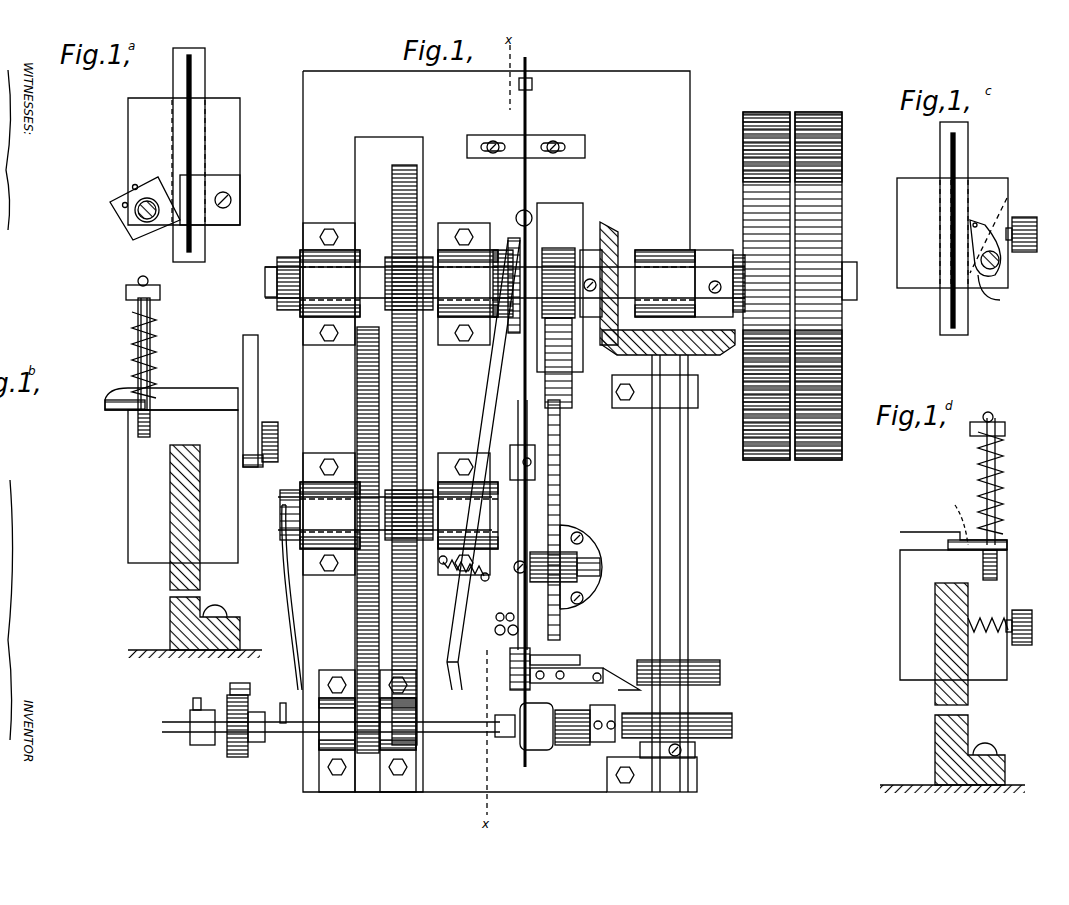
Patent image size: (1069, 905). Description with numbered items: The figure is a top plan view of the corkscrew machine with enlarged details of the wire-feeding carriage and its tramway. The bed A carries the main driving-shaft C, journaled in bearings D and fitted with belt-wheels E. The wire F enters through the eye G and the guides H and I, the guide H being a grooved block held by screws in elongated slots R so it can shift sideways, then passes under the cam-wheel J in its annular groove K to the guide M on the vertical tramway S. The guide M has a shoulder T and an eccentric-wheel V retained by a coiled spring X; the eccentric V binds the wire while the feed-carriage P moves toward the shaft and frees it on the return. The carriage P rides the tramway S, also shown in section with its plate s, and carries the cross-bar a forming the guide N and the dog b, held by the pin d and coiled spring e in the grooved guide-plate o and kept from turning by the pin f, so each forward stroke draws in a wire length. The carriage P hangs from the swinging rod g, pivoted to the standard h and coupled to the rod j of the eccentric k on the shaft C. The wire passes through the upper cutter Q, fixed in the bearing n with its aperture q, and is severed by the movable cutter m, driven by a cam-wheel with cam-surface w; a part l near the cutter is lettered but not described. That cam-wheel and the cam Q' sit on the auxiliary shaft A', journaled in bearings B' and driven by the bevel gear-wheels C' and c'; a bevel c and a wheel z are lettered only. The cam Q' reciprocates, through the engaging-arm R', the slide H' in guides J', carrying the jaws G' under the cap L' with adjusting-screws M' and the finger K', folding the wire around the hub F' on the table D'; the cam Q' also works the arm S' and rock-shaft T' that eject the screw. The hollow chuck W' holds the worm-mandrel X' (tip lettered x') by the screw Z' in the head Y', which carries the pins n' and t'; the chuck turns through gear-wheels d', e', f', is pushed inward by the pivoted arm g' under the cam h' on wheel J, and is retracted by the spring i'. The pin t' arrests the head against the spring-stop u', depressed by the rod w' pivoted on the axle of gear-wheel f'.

In FIG. 1, the bearings D is at (497, 399).
In FIG. 1, the gear-wheel d' is at (389, 464).
In FIG. 1, the gear-wheel e' is at (414, 455).
In FIG. 1, the gear-wheel f' is at (358, 540).
In FIG. 1, the wire F is at (535, 412).
In FIG. 1, the eye G is at (533, 84).
In FIG. 1, the guide H is at (526, 138).
In FIG. 1, the elongated slots R is at (531, 159).
In FIG. 1, the guide I is at (520, 213).
In FIG. 1, the cam-wheel J is at (509, 278).
In FIG. 1, the annular groove K is at (560, 287).
In FIG. 1, the cam h' is at (502, 278).
In FIG. 1, the standard h is at (558, 328).
In FIG. 1, the bevel gear c is at (613, 276).
In FIG. 1, the main driving-shaft C is at (859, 281).
In FIG. 1, the belt-wheels E is at (799, 286).
In FIG. 1, the bevel gear-wheel c' is at (662, 347).
In FIG. 1, the bevel gear-wheels C' is at (724, 362).
In FIG. 1, the auxiliary driving-shaft A' is at (678, 573).
In FIG. 1, the bearings B' is at (652, 583).
In FIG. 1, the bed A is at (601, 456).
In FIG. 1, the gear z is at (678, 672).
In FIG. 1, the cam Q' is at (677, 725).
In FIG. 1, the arm S' is at (667, 750).
In FIG. 1, the rock-shaft T' is at (631, 762).
In FIG. 1, the rod j is at (552, 514).
In FIG. 1, the tramway S is at (528, 525).
In FIG. 1B, the tramway S is at (173, 519).
In FIG. 1C, the tramway S is at (972, 321).
In FIG. 1D, the tramway S is at (939, 644).
In FIG. 1, the cam-surface w is at (541, 462).
In FIG. 1C, the cam-surface w is at (1008, 264).
In FIG. 1D, the cam-surface w is at (999, 478).
In FIG. 1, the shoulder T is at (508, 440).
In FIG. 1D, the shoulder T is at (941, 606).
In FIG. 1, the guide M is at (503, 470).
In FIG. 1C, the guide M is at (952, 233).
In FIG. 1D, the guide M is at (899, 520).
In FIG. 1, the eccentric-wheel V is at (535, 468).
In FIG. 1C, the eccentric-wheel V is at (988, 265).
In FIG. 1D, the eccentric-wheel V is at (959, 518).
In FIG. 1, the eccentric k is at (565, 567).
In FIG. 1, the guide N is at (516, 567).
In FIG. 1, the central aperture q is at (535, 548).
In FIG. 1, the spring i' is at (464, 574).
In FIG. 1, the pivoted arm g' is at (483, 465).
In FIG. 1, the feed-carriage P is at (497, 598).
In FIG. 1B, the feed-carriage P is at (128, 487).
In FIG. 1, the rod l is at (515, 696).
In FIG. 1, the upper cutter Q is at (528, 664).
In FIG. 1, the dog b is at (497, 625).
In FIG. 1A, the dog b is at (124, 206).
In FIG. 1B, the dog b is at (108, 410).
In FIG. 1, the coiled spring e is at (497, 610).
In FIG. 1A, the coiled spring e is at (119, 221).
In FIG. 1B, the coiled spring e is at (135, 355).
In FIG. 1, the cross-bar a is at (512, 638).
In FIG. 1B, the cross-bar a is at (171, 392).
In FIG. 1, the rod w' is at (282, 597).
In FIG. 1, the worm-mandrel X' is at (188, 730).
In FIG. 1, the screw Z' is at (195, 696).
In FIG. 1, the head Y' is at (237, 736).
In FIG. 1, the pin n' is at (249, 689).
In FIG. 1, the pin t' is at (256, 719).
In FIG. 1, the spring-stop u' is at (277, 712).
In FIG. 1, the hollow chuck W' is at (352, 745).
In FIG. 1, the worm-mandrel x' is at (498, 736).
In FIG. 1, the movable cutter m is at (554, 688).
In FIG. 1, the guides J' is at (573, 729).
In FIG. 1, the hub F' is at (524, 726).
In FIG. 1C, the hub F' is at (973, 154).
In FIG. 1D, the hub F' is at (953, 520).
In FIG. 1, the jaws G' is at (572, 721).
In FIG. 1, the engaging-arm R' is at (604, 723).
In FIG. 1, the finger K' is at (515, 704).
In FIG. 1, the cap L' is at (533, 696).
In FIG. 1, the adjusting-screws M' is at (539, 768).
In FIG. 1, the slide H' is at (594, 758).
In FIG. 1, the table D' is at (501, 756).
In FIG. 1, the bearing n is at (512, 658).
In FIG. 1A, the grooved guide-plate o is at (232, 200).
In FIG. 1A, the pin d is at (145, 221).
In FIG. 1B, the pin d is at (154, 343).
In FIG. 1A, the pin f is at (137, 175).
In FIG. 1A, the tramway s is at (204, 237).
In FIG. 1B, the swinging rod g is at (260, 401).
In FIG. 1C, the coiled spring X is at (1003, 234).
In FIG. 1D, the coiled spring X is at (1000, 538).